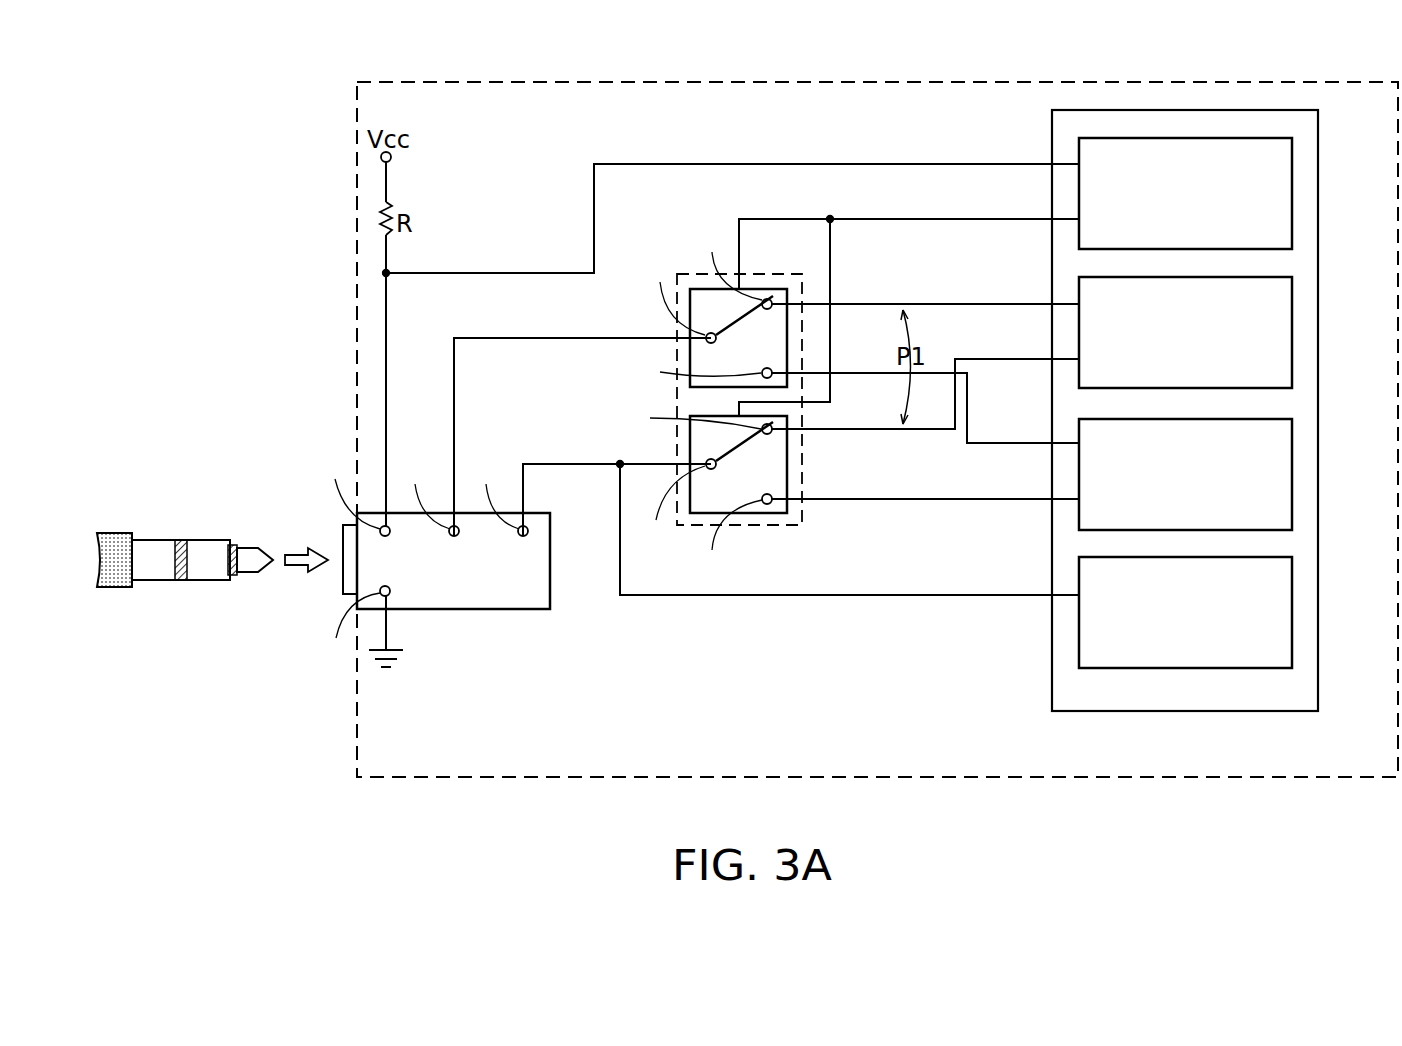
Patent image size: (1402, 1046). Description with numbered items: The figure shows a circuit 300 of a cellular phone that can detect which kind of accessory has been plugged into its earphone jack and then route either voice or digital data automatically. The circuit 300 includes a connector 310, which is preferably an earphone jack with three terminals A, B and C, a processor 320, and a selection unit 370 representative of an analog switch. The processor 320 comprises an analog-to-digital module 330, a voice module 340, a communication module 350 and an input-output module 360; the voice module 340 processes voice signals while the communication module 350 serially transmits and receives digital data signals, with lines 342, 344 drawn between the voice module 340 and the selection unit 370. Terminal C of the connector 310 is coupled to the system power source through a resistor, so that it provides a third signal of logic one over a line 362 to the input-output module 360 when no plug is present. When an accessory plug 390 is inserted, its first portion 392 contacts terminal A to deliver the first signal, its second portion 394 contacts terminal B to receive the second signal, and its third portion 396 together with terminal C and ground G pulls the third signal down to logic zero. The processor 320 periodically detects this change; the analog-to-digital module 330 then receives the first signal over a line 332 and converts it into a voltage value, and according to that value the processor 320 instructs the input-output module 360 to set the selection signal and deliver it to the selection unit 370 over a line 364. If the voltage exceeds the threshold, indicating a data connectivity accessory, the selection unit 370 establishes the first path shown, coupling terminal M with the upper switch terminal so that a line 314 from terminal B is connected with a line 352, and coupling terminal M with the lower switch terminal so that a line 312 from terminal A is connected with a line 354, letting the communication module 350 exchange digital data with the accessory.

The circuit 300 is at (875, 765).
The connector 310 is at (492, 609).
The line 312 is at (523, 489).
The line 314 is at (454, 378).
The processor 320 is at (1187, 711).
The analog-to-digital module 330 is at (1292, 610).
The line 332 is at (1040, 597).
The voice module 340 is at (1292, 471).
The voice module line 342 is at (1040, 445).
The voice module line 344 is at (1040, 501).
The communication module 350 is at (1292, 332).
The line 352 is at (1040, 306).
The line 354 is at (1040, 361).
The input-output module 360 is at (1292, 193).
The line 362 is at (1040, 166).
The line 364 is at (1040, 221).
The selection unit 370 is at (748, 525).
The accessory plug 390 is at (185, 553).
The first portion 392 is at (249, 545).
The second portion 394 is at (207, 540).
The third portion 396 is at (152, 540).